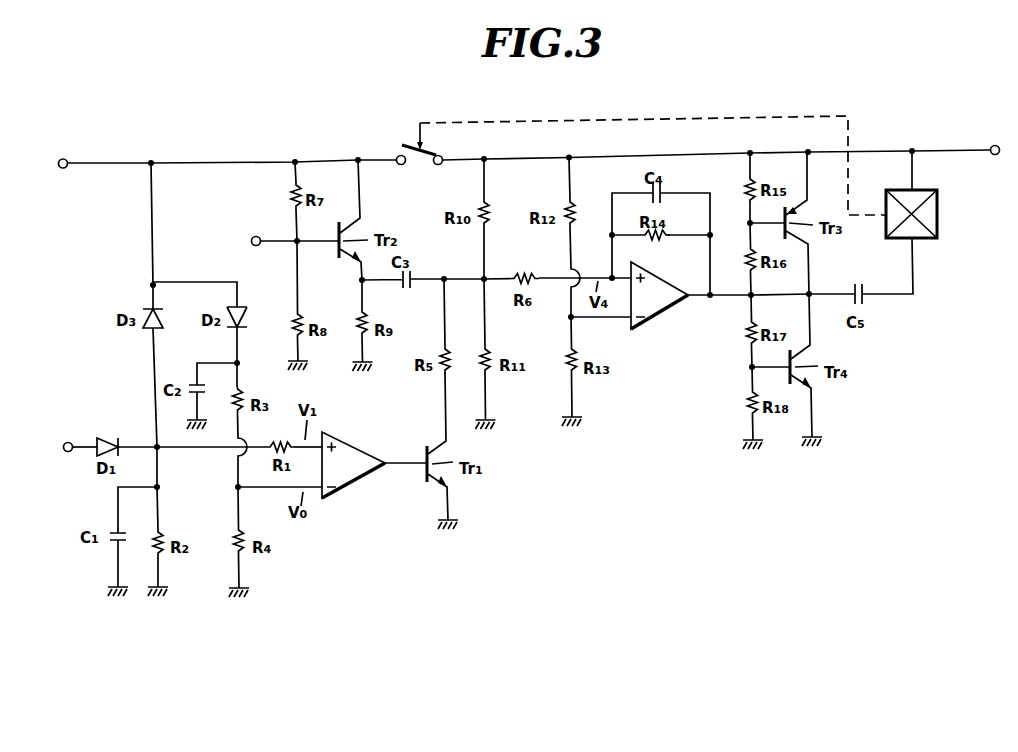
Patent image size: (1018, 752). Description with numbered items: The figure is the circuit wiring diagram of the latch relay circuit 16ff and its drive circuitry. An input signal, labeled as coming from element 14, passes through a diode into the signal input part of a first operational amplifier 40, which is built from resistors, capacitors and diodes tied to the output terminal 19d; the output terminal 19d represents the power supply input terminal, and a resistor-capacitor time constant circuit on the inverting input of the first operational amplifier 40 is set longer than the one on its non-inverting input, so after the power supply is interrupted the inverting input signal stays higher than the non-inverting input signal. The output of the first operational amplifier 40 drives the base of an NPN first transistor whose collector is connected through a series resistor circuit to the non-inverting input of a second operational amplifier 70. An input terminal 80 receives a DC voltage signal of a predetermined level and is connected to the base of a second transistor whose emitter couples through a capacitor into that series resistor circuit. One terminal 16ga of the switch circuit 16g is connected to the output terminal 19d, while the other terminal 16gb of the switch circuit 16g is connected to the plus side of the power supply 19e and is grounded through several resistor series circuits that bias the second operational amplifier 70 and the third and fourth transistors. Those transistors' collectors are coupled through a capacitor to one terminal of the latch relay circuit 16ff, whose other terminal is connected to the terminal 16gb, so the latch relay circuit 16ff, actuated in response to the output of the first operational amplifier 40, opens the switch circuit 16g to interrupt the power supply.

The input from element 14 is at (70, 441).
The output terminal 19d is at (64, 169).
The plus side of power supply 19e is at (995, 155).
The input terminal 80 is at (256, 236).
The first operational amplifier 40 is at (363, 481).
The second operational amplifier 70 is at (660, 320).
The terminal of the switch circuit 16ga is at (398, 155).
The other terminal of the switch circuit 16gb is at (441, 152).
The switch circuit 16g is at (421, 166).
The latch relay circuit 16ff is at (938, 215).